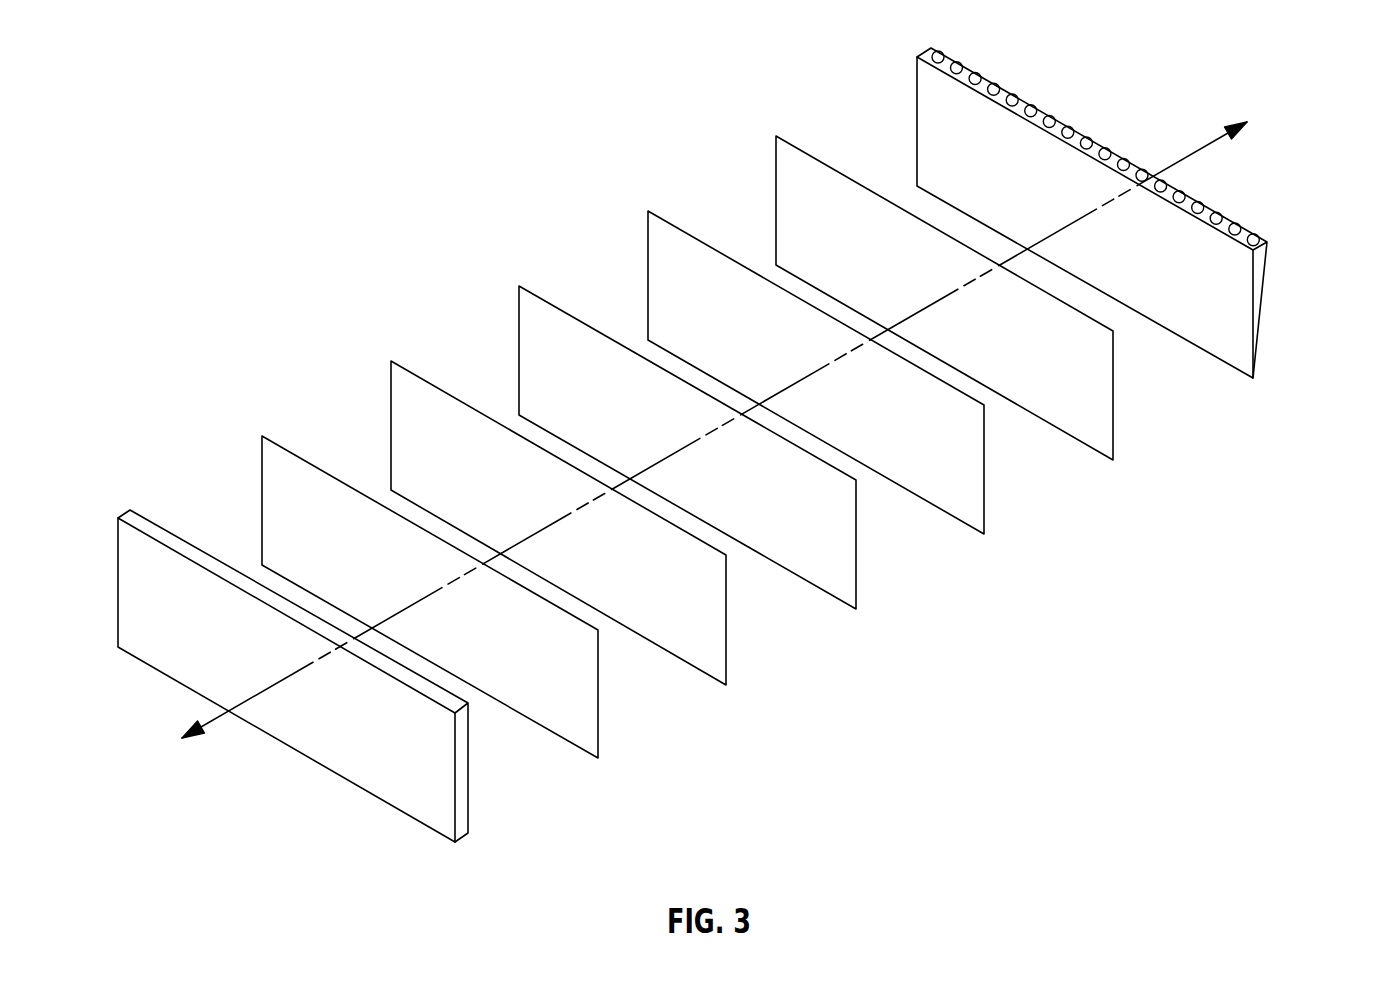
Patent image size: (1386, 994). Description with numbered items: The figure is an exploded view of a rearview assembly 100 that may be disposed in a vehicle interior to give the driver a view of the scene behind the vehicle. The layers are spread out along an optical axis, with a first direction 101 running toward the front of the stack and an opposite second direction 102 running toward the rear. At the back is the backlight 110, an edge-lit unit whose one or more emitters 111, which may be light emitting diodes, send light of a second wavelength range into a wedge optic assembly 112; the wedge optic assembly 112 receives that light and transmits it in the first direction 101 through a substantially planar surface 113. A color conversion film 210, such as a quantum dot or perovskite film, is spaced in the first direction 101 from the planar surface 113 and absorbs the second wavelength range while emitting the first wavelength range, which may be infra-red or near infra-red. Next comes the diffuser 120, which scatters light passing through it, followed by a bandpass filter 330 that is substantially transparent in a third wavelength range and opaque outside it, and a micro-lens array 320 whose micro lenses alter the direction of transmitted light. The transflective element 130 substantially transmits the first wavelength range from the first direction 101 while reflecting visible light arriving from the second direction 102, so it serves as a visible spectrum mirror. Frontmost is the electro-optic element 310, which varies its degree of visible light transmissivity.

The rearview assembly 100 is at (288, 180).
The first direction 101 is at (696, 444).
The second direction 102 is at (1259, 119).
The backlight 110 is at (1157, 497).
The emitters 111 is at (1088, 134).
The wedge optic assembly 112 is at (1261, 320).
The planar surface 113 is at (943, 147).
The diffuser 120 is at (985, 473).
The transflective element 130 is at (598, 698).
The color conversion film 210 is at (1113, 400).
The electro-optic element 310 is at (468, 773).
The micro-lens array 320 is at (726, 623).
The bandpass filter 330 is at (856, 548).